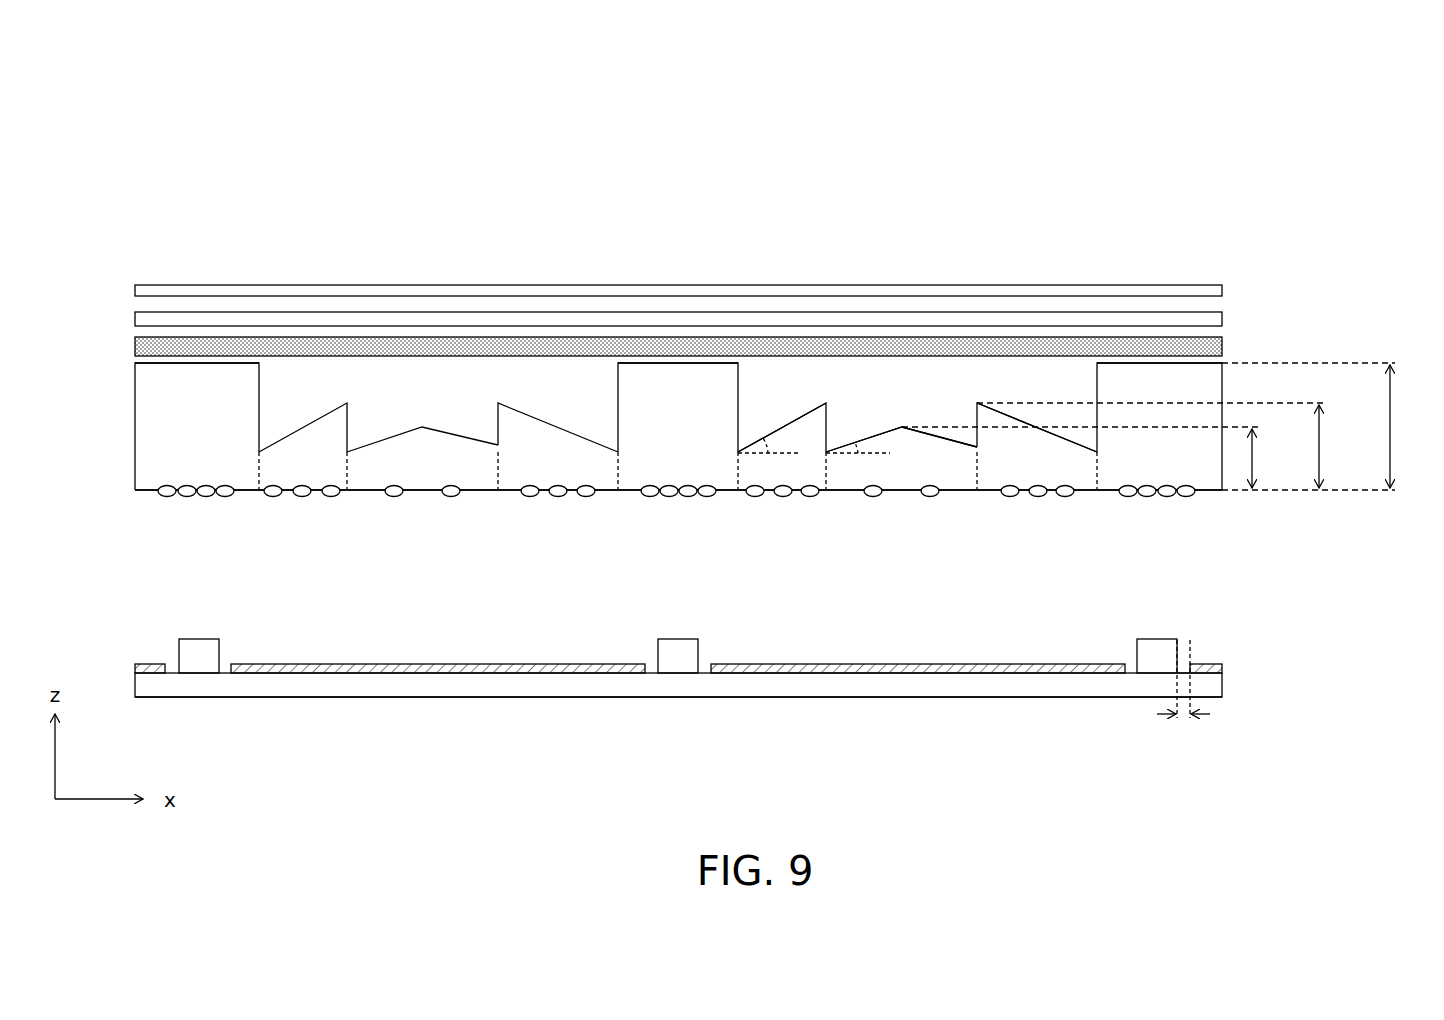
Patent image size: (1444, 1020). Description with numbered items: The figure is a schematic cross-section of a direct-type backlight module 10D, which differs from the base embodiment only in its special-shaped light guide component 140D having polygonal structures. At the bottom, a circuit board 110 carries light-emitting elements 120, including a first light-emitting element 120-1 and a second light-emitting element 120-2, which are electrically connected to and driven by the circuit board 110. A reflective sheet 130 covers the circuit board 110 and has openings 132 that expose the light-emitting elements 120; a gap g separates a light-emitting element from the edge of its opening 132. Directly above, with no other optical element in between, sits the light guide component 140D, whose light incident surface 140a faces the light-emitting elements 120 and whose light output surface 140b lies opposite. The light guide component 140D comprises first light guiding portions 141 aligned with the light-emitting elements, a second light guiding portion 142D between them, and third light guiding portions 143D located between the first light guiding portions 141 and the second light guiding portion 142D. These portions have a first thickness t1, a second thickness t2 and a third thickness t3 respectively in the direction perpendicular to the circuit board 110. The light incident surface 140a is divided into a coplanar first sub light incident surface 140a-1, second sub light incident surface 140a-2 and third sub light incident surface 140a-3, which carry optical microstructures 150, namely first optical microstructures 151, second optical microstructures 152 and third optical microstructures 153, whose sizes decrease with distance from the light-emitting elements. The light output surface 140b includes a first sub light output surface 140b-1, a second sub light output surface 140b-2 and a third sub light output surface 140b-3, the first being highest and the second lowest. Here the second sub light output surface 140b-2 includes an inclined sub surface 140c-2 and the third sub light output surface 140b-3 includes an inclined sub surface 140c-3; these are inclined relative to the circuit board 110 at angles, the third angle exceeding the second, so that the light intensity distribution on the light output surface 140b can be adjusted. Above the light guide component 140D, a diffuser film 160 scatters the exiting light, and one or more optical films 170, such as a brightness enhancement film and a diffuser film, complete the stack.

The backlight module 10D is at (1368, 798).
The circuit board 110 is at (1207, 685).
The light-emitting elements 120 is at (388, 40).
The first light-emitting element 120-1 is at (1148, 653).
The second light-emitting element 120-2 is at (668, 653).
The reflective sheet 130 is at (1222, 668).
The openings 132 is at (1189, 664).
The light guide component 140D is at (581, 40).
The first light guiding portion 141 is at (1252, 383).
The second light guiding portion 142D is at (934, 452).
The third light guiding portion 143D is at (1057, 449).
The light incident surface 140a is at (776, 40).
The first sub light incident surface 140a-1 is at (1212, 542).
The second sub light incident surface 140a-2 is at (965, 542).
The third sub light incident surface 140a-3 is at (1090, 542).
The light output surface 140b is at (1000, 40).
The first sub light output surface 140b-1 is at (636, 361).
The second sub light output surface 140b-2 is at (948, 262).
The third sub light output surface 140b-3 is at (898, 280).
The inclined sub surface 140c-2 is at (875, 431).
The inclined sub surface 140c-3 is at (1011, 413).
The optical microstructures 150 is at (1206, 40).
The first optical microstructures 151 is at (1160, 512).
The second optical microstructures 152 is at (890, 512).
The third optical microstructures 153 is at (755, 497).
The diffuser film 160 is at (1200, 348).
The optical film 170 is at (1200, 318).
The first thickness t1 is at (1406, 426).
The second thickness t2 is at (1269, 458).
The third thickness t3 is at (1335, 446).
The gap g is at (1183, 697).